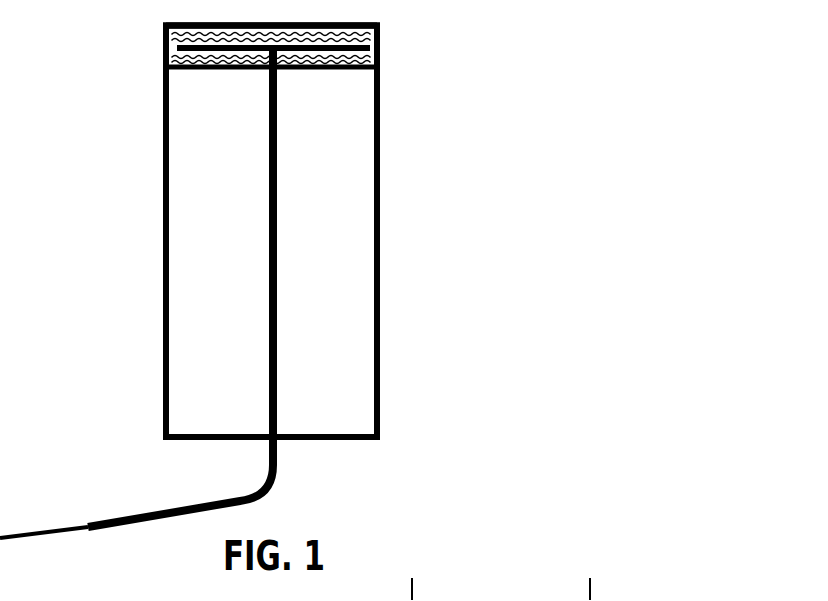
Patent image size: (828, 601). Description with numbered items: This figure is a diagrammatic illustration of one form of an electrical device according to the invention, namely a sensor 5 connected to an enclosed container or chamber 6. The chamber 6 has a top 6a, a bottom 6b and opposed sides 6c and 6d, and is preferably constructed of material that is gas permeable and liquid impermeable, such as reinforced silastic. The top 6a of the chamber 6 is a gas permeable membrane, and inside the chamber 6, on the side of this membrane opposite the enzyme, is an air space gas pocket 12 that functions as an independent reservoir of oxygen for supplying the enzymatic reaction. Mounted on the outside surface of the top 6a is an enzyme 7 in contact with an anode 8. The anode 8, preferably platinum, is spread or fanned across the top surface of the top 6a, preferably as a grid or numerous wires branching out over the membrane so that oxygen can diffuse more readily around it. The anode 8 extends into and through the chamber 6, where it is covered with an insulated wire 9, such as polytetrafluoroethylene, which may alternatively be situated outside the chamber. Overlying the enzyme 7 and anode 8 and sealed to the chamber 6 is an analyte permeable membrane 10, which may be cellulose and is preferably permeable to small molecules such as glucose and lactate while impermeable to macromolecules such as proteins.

The sensor 5 is at (472, 182).
The chamber 6 is at (158, 210).
The top 6a is at (378, 100).
The bottom 6b is at (160, 172).
The side 6c is at (383, 230).
The side 6d is at (347, 443).
The enzyme 7 is at (163, 38).
The anode 8 is at (303, 68).
The insulated wire 9 is at (277, 295).
The analyte permeable membrane 10 is at (380, 30).
The air space gas pocket 12 is at (352, 352).